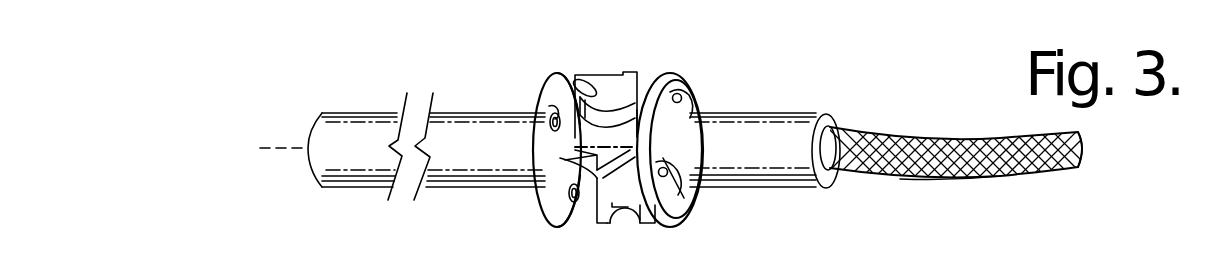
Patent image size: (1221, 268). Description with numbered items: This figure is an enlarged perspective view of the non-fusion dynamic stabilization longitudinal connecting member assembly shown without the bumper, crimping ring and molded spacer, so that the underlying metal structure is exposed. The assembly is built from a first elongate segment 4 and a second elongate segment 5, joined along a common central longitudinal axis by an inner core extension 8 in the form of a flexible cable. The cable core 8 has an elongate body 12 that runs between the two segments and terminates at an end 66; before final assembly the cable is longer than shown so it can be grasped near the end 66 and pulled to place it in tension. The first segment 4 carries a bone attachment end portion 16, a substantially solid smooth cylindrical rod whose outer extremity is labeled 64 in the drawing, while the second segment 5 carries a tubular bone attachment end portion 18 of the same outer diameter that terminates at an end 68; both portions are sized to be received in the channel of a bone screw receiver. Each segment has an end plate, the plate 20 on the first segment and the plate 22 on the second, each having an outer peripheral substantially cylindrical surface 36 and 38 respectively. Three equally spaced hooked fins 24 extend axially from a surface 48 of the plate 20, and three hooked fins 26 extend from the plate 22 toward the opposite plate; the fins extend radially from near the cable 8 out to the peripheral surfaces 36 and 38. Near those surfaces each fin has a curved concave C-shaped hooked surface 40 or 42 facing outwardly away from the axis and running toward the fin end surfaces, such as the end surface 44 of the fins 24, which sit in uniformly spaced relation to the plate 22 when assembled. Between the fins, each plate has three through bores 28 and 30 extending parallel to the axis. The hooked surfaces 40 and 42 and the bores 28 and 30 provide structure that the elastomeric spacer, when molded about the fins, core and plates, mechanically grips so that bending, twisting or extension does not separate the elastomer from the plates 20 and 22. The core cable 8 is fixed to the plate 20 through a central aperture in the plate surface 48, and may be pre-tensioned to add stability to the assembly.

The first elongate segment 4 is at (437, 203).
The second elongate segment 5 is at (756, 198).
The inner core extension 8 is at (862, 130).
The elongate body 12 is at (912, 181).
The bone attachment end portion 16 is at (357, 189).
The bone attachment end portion 18 is at (746, 112).
The end plate 20 is at (573, 76).
The end plate 22 is at (665, 77).
The hooked fin 24 is at (612, 80).
The hooked fin 26 is at (554, 93).
The through bore 28 is at (550, 123).
The through bore 30 is at (683, 102).
The outer peripheral cylindrical surface 36 is at (560, 78).
The outer peripheral cylindrical surface 38 is at (652, 227).
The hooked surface 40 is at (596, 92).
The hooked surface 42 is at (622, 100).
The end surface 44 is at (633, 155).
The plate surface 48 is at (547, 109).
The tube end cap 64 is at (318, 116).
The end 66 is at (1082, 132).
The end 68 is at (830, 114).